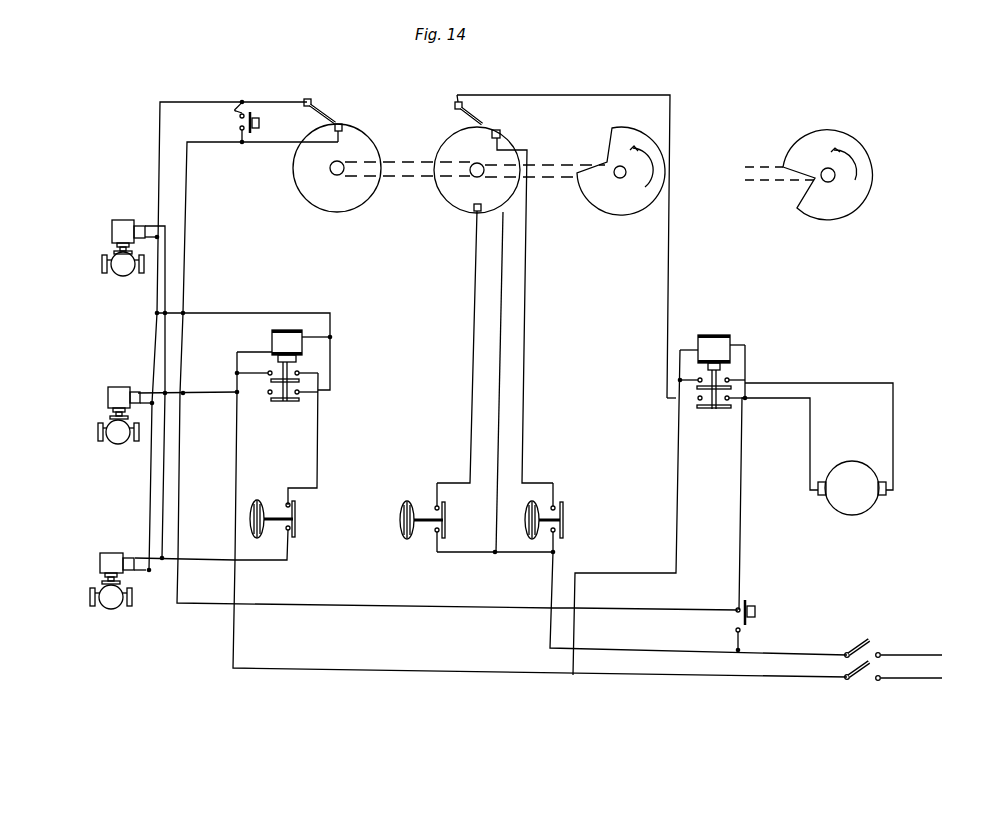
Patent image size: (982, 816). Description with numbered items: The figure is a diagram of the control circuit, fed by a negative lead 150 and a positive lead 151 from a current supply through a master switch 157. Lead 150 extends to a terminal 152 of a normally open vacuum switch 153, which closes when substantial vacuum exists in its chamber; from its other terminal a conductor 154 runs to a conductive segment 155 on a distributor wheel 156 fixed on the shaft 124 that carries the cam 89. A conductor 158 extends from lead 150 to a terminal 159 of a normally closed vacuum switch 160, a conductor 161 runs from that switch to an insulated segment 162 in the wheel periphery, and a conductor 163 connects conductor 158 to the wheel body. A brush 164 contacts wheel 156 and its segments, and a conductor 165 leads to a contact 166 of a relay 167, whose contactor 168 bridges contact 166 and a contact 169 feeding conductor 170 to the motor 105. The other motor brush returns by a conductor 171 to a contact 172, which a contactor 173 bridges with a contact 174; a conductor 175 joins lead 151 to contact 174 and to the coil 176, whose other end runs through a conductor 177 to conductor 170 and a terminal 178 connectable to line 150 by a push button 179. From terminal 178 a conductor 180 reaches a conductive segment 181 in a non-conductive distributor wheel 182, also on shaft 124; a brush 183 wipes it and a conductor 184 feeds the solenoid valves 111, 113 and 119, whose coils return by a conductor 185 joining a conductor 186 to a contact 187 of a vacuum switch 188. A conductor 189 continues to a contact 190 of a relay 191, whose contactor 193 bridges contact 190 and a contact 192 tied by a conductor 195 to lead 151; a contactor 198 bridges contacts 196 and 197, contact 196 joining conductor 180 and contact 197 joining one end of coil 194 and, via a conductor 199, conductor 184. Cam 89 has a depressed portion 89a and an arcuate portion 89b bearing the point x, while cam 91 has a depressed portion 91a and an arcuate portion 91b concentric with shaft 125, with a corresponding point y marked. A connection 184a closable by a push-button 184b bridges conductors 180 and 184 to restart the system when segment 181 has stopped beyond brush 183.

The conductor 184 is at (185, 86).
The connection 184a is at (242, 100).
The push-button 184b is at (256, 135).
The brush 183 is at (320, 108).
The conductive segment 181 is at (344, 125).
The distributor wheel 182 is at (370, 148).
The conductor 180 is at (186, 203).
The conductor 185 is at (168, 268).
The solenoid operated valve 111 is at (100, 263).
The solenoid operated valve 113 is at (90, 430).
The solenoid operated valve 119 is at (108, 608).
The conductor 199 is at (223, 303).
The coil 194 is at (305, 330).
The relay 191 is at (288, 325).
The contactor 193 is at (300, 380).
The contactor 198 is at (277, 402).
The contact 192 is at (268, 370).
The contact 190 is at (302, 371).
The contact 196 is at (267, 390).
The contact 197 is at (300, 394).
The conductor 195 is at (236, 446).
The conductor 189 is at (318, 444).
The vacuum switch 188 is at (268, 503).
The contact 187 is at (284, 531).
The conductor 186 is at (204, 547).
The conductor 165 is at (672, 124).
The brush 164 is at (470, 105).
The conductive segment 155 is at (500, 134).
The distributor wheel 156 is at (445, 205).
The shaft 124 is at (552, 184).
The conductive segment 162 is at (474, 212).
The conductor 161 is at (472, 356).
The conductor 163 is at (500, 310).
The conductor 154 is at (524, 370).
The cam 89 is at (641, 205).
The depressed portion 89a is at (606, 158).
The fully arcuate portion 89b is at (664, 160).
The point x is at (620, 128).
The shaft 125 is at (756, 166).
The cam 91 is at (834, 212).
The depressed portion 91a is at (805, 182).
The fully arcuate portion 91b is at (865, 200).
The reference point y is at (797, 208).
The coil 176 is at (705, 338).
The relay 167 is at (733, 332).
The contactor 173 is at (695, 388).
The contactor 168 is at (708, 409).
The contact 174 is at (696, 379).
The contact 166 is at (696, 400).
The contact 172 is at (733, 376).
The contact 169 is at (733, 393).
The conductor 171 is at (872, 374).
The conductor 170 is at (809, 432).
The conductor 177 is at (744, 482).
The conductor 175 is at (678, 547).
The motor 105 is at (855, 514).
The normally closed vacuum switch 160 is at (432, 504).
The terminal 159 is at (433, 534).
The conductor 158 is at (474, 555).
The normally open vacuum switch 153 is at (565, 513).
The terminal 152 is at (548, 535).
The terminal 178 is at (746, 606).
The push button 179 is at (756, 614).
The negative lead 150 is at (814, 653).
The positive lead 151 is at (806, 680).
The master switch 157 is at (872, 683).